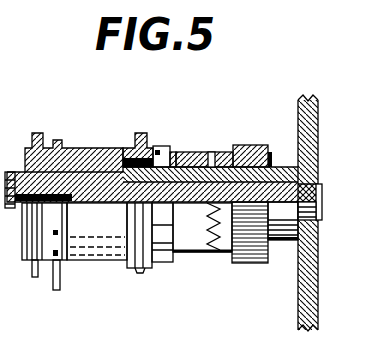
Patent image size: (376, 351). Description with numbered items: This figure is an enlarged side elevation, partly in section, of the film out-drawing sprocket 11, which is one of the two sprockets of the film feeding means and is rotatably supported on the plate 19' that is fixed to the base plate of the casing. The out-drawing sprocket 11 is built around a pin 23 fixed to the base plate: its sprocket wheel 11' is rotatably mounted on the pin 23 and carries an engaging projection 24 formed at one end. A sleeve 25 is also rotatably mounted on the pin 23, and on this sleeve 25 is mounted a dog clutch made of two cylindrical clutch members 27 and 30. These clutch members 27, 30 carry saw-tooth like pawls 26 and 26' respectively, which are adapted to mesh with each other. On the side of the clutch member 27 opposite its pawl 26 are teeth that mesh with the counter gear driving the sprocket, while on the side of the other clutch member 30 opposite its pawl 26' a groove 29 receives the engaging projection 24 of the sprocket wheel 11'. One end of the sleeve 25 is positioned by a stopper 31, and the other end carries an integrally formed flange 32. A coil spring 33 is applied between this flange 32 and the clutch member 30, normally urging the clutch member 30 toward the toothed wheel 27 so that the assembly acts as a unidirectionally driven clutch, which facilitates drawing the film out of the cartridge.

The film out-drawing sprocket 11 is at (50, 238).
The sprocket wheel 11' is at (74, 135).
The plate 19' is at (333, 213).
The pin 23 is at (290, 188).
The engaging projection 24 is at (157, 145).
The sleeve 25 is at (200, 150).
The saw-tooth like pawl 26 is at (202, 245).
The saw-tooth like pawl 26' is at (220, 257).
The cylindrical clutch member 27 is at (170, 254).
The groove 29 is at (177, 148).
The cylindrical clutch member 30 is at (253, 252).
The stopper 31 is at (282, 163).
The flange 32 is at (112, 150).
The coil spring 33 is at (127, 192).